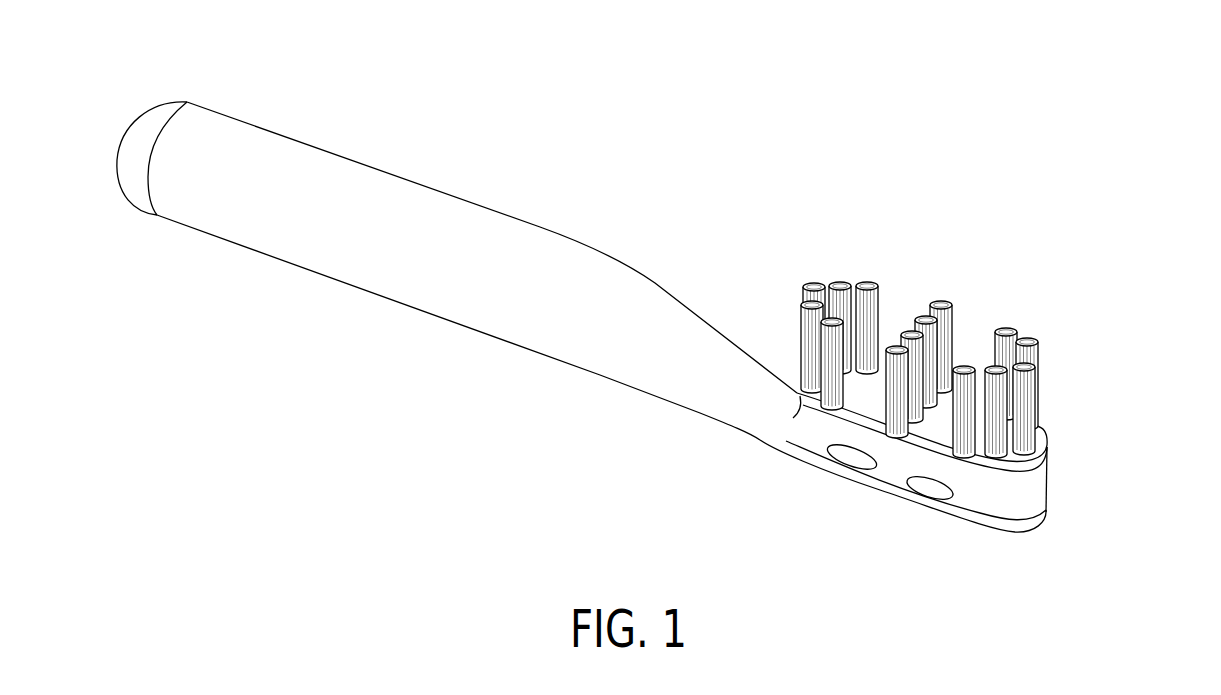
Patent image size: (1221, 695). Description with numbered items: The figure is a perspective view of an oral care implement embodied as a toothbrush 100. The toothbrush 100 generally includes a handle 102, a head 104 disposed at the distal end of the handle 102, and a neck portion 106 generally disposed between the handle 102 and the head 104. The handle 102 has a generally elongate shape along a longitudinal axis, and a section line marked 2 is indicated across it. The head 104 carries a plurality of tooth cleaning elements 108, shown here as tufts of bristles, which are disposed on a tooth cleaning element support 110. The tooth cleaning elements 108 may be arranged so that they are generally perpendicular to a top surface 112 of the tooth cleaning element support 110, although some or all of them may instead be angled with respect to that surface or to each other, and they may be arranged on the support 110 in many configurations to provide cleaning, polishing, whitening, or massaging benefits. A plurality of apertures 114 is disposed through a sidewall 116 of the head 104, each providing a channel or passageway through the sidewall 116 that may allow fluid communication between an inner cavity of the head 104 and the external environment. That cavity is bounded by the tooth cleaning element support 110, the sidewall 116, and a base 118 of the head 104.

The toothbrush 100 is at (654, 379).
The handle 102 is at (307, 250).
The head 104 is at (970, 455).
The neck portion 106 is at (723, 352).
The tooth cleaning elements 108 is at (987, 356).
The tooth cleaning element support 110 is at (927, 440).
The top surface 112 is at (979, 403).
The apertures 114 is at (842, 460).
The sidewall 116 is at (977, 487).
The base 118 is at (1050, 508).
The section line 2- 2 is at (150, 102).